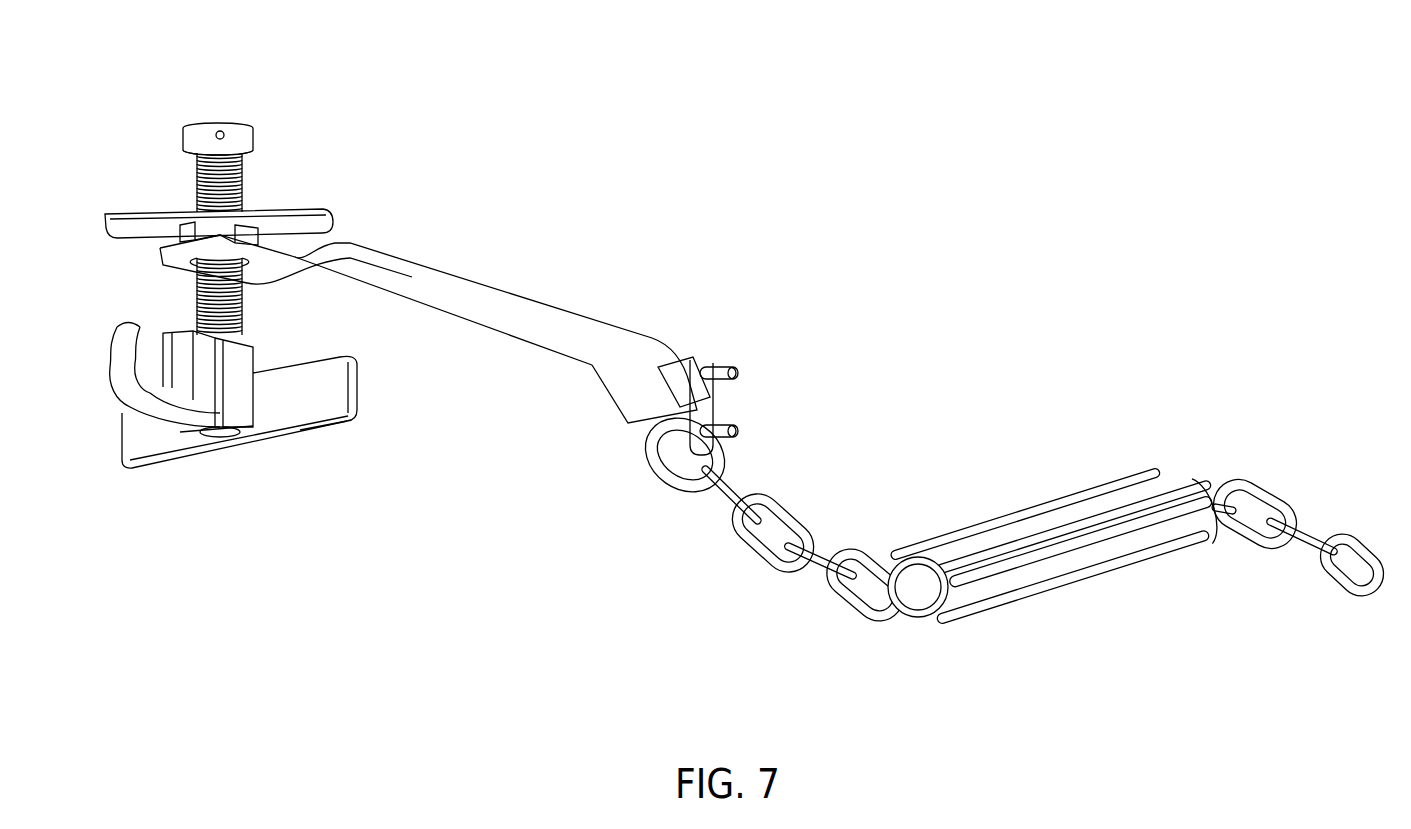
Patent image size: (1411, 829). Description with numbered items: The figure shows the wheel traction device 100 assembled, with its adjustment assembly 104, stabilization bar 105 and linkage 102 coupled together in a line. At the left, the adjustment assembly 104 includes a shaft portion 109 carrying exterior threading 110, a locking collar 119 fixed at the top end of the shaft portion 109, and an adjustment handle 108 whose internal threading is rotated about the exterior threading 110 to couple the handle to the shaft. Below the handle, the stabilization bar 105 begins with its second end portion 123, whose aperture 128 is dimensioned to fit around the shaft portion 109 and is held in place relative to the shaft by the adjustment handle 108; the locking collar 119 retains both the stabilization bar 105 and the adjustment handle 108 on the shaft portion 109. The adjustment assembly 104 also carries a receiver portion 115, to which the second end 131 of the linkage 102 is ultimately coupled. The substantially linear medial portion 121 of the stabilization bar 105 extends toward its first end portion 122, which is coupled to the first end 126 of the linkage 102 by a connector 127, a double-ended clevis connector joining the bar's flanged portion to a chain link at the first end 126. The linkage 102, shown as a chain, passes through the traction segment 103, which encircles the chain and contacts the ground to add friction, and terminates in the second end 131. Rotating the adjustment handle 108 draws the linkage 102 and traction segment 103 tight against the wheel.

The wheel traction device 100 is at (1028, 63).
The linkage 102 is at (852, 600).
The traction segment 103 is at (1025, 515).
The adjustment assembly 104 is at (98, 197).
The stabilization bar 105 is at (485, 312).
The adjustment handle 108 is at (312, 228).
The shaft portion 109 is at (197, 180).
The exterior threading 110 is at (247, 163).
The receiver portion 115 is at (135, 384).
The locking collar 119 is at (244, 138).
The medial portion 121 is at (520, 300).
The first end portion 122 is at (637, 373).
The second end portion 123 is at (270, 275).
The first end 126 is at (677, 473).
The connector 127 is at (700, 398).
The aperture 128 is at (187, 286).
The second end 131 is at (1362, 547).